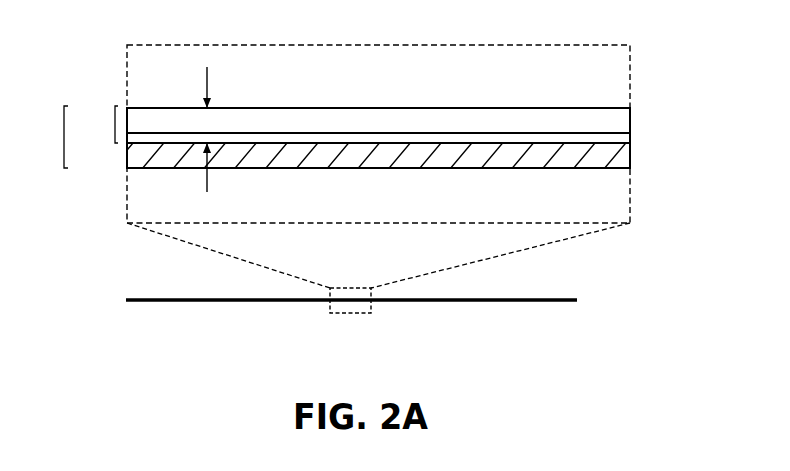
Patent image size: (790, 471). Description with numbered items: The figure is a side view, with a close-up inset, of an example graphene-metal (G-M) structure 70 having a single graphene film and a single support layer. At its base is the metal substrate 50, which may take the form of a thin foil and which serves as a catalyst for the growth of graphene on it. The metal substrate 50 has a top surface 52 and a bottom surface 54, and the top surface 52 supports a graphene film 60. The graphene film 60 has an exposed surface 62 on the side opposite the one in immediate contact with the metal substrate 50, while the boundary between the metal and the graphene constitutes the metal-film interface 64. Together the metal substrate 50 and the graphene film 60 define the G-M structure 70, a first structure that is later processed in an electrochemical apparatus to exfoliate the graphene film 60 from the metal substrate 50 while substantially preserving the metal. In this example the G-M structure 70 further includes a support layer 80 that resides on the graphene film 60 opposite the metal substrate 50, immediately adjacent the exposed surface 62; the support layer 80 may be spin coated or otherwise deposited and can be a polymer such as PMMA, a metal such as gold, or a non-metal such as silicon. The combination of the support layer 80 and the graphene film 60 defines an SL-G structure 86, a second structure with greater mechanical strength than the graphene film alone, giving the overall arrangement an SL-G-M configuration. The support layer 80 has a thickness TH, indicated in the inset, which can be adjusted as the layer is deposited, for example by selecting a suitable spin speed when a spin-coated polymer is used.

The metal substrate 50 is at (632, 157).
The top surface 52 is at (632, 140).
The bottom surface 54 is at (616, 170).
The graphene film 60 is at (613, 137).
The exposed surface 62 is at (487, 131).
The metal-film interface 64 is at (127, 144).
The graphene-metal (G-M) structure 70 is at (64, 138).
The support layer 80 is at (593, 118).
The SL-G structure 86 is at (115, 125).
The thickness TH is at (208, 78).